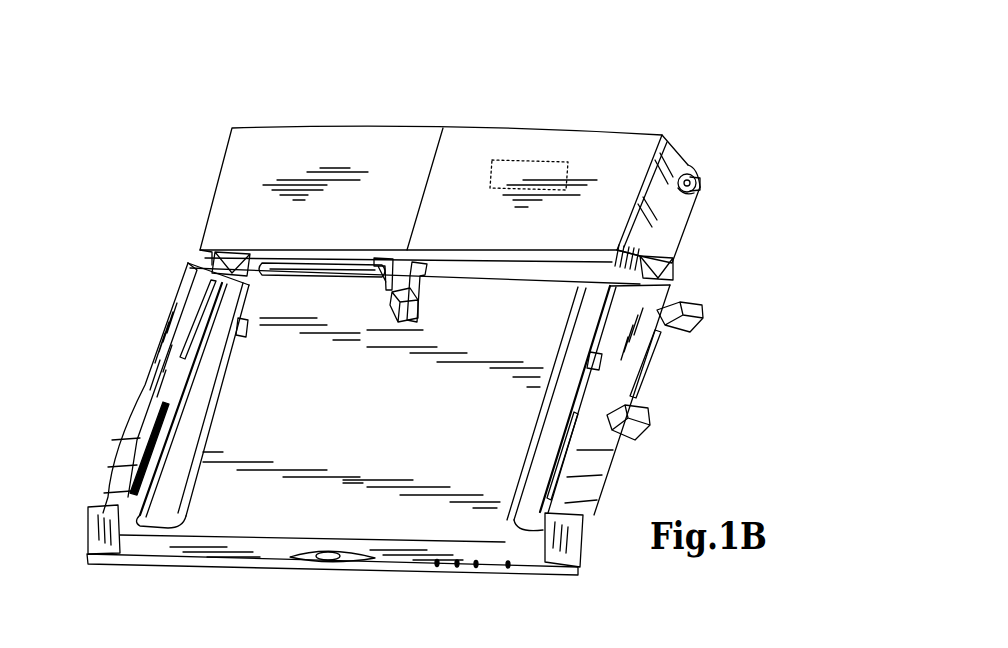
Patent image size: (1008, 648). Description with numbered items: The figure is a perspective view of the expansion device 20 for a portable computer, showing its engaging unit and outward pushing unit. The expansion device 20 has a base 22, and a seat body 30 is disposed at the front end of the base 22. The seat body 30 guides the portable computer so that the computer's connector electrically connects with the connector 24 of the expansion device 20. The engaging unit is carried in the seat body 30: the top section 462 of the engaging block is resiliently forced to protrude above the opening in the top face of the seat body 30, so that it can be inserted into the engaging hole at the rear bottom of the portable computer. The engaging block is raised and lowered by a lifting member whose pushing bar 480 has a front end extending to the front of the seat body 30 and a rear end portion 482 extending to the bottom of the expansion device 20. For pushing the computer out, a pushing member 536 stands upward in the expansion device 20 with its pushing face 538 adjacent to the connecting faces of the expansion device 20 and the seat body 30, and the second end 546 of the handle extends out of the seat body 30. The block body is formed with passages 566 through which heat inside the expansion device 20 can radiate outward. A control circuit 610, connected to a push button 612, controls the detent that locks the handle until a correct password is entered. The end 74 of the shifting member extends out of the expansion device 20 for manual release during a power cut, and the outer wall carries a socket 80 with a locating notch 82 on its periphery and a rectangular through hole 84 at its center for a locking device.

The expansion device 20 is at (700, 218).
The base 22 is at (673, 220).
The connector 24 is at (290, 248).
The seat body 30 is at (493, 572).
The end of shifting member 74 is at (690, 176).
The socket 80 is at (701, 189).
The locating notch 82 is at (698, 179).
The rectangular through hole 84 is at (683, 168).
The top section of engaging block 462 is at (392, 287).
The pushing bar 480 is at (420, 312).
The rear end portion of pushing bar 482 is at (428, 273).
The pushing member 536 is at (145, 245).
The pushing face 538 is at (215, 256).
The second end of handle 546 is at (678, 332).
The passages 566 is at (195, 271).
The control circuit 610 is at (522, 165).
The push button 612 is at (317, 567).